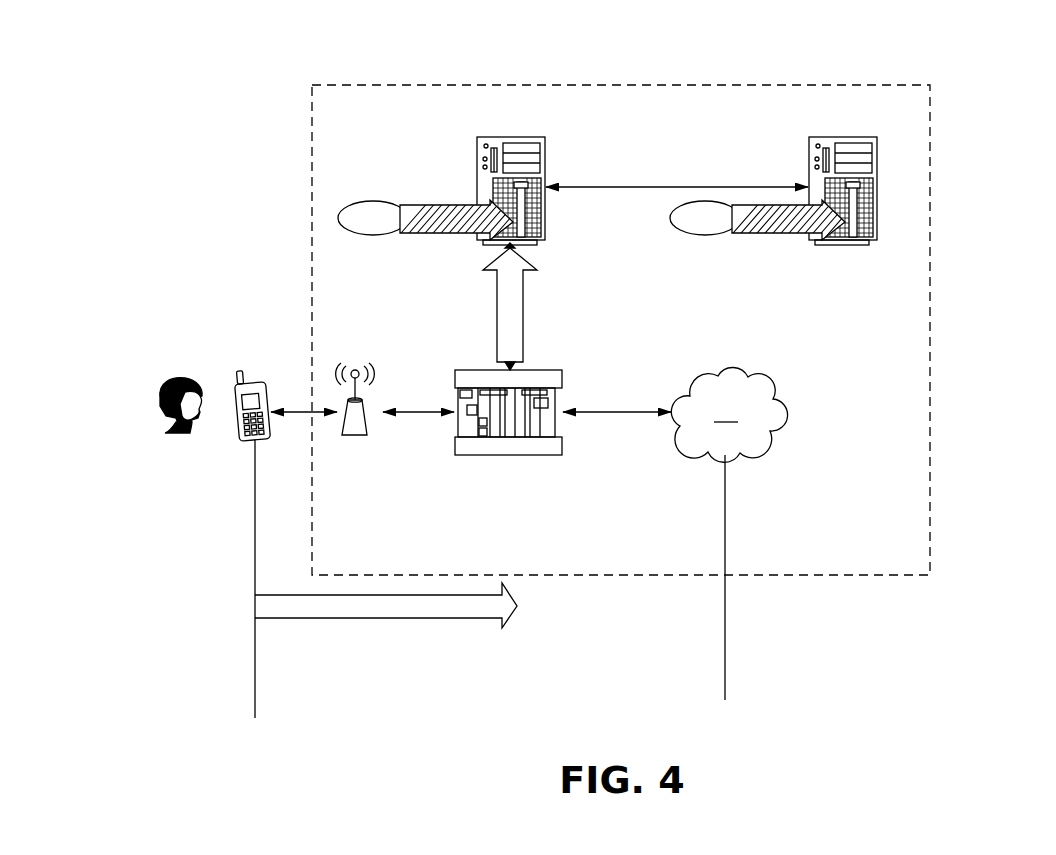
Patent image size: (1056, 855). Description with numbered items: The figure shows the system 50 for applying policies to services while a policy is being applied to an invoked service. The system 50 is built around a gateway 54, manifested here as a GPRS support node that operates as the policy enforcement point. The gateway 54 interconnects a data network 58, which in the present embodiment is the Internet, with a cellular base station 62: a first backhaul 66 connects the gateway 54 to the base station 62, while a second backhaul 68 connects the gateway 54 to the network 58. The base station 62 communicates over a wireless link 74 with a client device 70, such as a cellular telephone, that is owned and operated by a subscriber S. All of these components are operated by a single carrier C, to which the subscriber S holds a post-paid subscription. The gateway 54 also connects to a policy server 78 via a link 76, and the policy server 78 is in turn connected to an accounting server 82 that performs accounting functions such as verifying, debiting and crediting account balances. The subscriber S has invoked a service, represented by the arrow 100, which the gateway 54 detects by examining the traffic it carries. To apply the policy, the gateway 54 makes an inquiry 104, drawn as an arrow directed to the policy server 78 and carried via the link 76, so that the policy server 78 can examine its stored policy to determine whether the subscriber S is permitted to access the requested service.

The system 50 is at (217, 621).
The gateway 54 is at (460, 458).
The data network 58 is at (729, 533).
The cellular base station 62 is at (355, 437).
The first backhaul 66 is at (413, 414).
The second backhaul 68 is at (610, 414).
The client device 70 is at (236, 426).
The wireless link 74 is at (297, 414).
The link 76 is at (500, 252).
The policy server 78 is at (513, 135).
The accounting server 82 is at (845, 135).
The service invocation arrow 100 is at (431, 625).
The inquiry 104 is at (497, 312).
The subscriber S is at (190, 373).
The carrier C is at (952, 535).